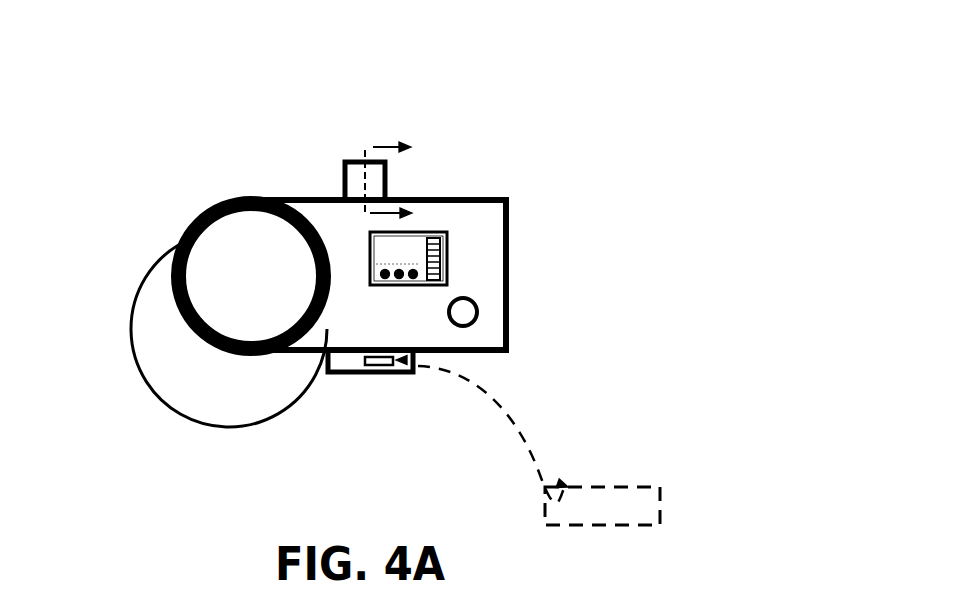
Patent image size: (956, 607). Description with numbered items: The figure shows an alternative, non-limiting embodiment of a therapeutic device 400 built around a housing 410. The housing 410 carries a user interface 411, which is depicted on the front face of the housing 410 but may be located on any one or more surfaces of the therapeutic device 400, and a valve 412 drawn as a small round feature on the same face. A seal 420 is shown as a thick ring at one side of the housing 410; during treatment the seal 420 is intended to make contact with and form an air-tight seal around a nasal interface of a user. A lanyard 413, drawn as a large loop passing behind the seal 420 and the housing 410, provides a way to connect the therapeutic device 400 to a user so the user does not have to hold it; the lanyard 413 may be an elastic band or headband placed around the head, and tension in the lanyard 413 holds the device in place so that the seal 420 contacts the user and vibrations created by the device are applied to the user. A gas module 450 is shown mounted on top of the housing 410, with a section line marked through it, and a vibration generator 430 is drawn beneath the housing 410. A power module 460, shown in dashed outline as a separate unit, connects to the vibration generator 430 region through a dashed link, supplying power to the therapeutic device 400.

The therapeutic device 400 is at (217, 28).
The housing 410 is at (312, 192).
The user interface 411 is at (466, 227).
The valve 412 is at (496, 323).
The lanyard 413 is at (160, 418).
The seal 420 is at (180, 215).
The vibration generator 430 is at (345, 392).
The gas module 450 is at (335, 153).
The power module 460 is at (414, 364).